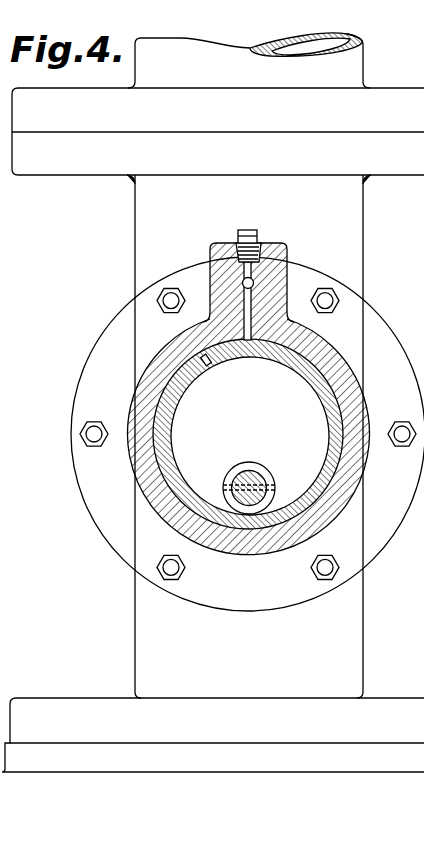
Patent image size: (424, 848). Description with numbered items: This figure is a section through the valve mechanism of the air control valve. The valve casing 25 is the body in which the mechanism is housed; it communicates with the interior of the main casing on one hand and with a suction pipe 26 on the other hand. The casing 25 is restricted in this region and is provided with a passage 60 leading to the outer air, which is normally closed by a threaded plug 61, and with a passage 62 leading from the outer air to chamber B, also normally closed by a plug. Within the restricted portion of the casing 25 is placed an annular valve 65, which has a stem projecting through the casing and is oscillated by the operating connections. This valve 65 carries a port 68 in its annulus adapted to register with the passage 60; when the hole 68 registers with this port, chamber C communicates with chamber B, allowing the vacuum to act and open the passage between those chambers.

The valve casing 25 is at (157, 358).
The suction pipe 26 is at (350, 63).
The passage 60 is at (248, 305).
The threaded plug 61 is at (249, 238).
The passage 62 is at (252, 281).
The annular valve 65 is at (157, 446).
The port 68 is at (208, 366).